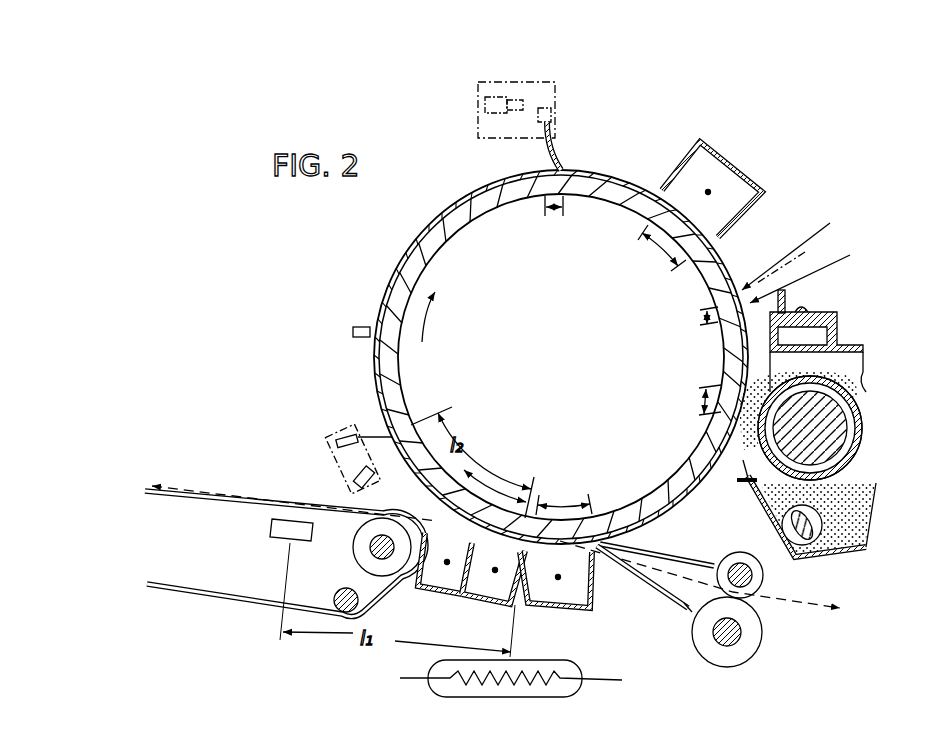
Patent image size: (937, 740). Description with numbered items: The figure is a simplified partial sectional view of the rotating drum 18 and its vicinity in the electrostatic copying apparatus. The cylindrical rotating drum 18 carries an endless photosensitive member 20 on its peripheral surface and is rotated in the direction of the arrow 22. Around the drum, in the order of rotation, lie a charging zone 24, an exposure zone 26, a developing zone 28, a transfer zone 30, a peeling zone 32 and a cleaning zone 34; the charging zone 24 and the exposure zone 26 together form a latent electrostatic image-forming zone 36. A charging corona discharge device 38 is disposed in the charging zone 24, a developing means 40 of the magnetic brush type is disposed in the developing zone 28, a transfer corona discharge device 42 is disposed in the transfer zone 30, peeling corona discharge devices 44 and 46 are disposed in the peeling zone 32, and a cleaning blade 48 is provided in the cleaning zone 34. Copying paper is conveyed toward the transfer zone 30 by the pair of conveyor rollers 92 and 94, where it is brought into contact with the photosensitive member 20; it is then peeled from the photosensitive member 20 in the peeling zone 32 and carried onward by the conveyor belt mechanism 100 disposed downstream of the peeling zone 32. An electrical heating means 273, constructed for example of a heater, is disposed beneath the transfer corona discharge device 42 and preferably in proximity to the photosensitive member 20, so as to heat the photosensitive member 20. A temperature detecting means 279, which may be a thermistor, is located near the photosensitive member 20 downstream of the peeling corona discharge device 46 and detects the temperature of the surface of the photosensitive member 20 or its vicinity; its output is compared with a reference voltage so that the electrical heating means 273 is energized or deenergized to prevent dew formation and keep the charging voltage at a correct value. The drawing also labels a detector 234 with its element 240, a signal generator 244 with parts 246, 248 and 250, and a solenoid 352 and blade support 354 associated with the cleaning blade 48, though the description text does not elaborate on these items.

The rotating drum 18 is at (472, 225).
The photosensitive member 20 is at (402, 252).
The arrow 22 is at (424, 327).
The charging zone 24 is at (661, 249).
The exposure zone 26 is at (696, 321).
The developing zone 28 is at (703, 398).
The transfer zone 30 is at (562, 503).
The peeling zone 32 is at (503, 477).
The cleaning zone 34 is at (557, 215).
The latent electrostatic image-forming zone 36 is at (633, 265).
The charging corona discharge device 38 is at (686, 160).
The developing means 40 is at (836, 562).
The transfer corona discharge device 42 is at (577, 610).
The peeling corona discharge device 44 is at (468, 600).
The peeling corona discharge device 46 is at (421, 589).
The cleaning blade 48 is at (555, 108).
The conveyor roller 92 is at (750, 647).
The conveyor roller 94 is at (740, 553).
The conveyor belt mechanism 100 is at (187, 599).
The detector 234 is at (241, 552).
The detector element 240 is at (313, 528).
The signal generator 244 is at (325, 438).
The signal generator element 246 is at (355, 478).
The signal generator sensor 248 is at (345, 435).
The signal generator lead 250 is at (340, 464).
The electrical heating means 273 is at (547, 698).
The temperature detecting means 279 is at (363, 326).
The solenoid 352 is at (483, 106).
The blade support 354 is at (484, 80).